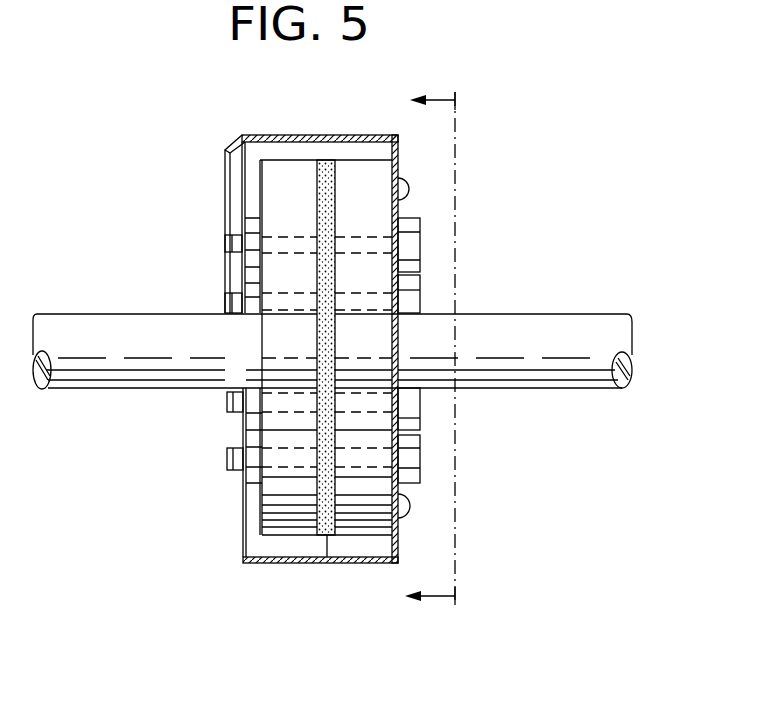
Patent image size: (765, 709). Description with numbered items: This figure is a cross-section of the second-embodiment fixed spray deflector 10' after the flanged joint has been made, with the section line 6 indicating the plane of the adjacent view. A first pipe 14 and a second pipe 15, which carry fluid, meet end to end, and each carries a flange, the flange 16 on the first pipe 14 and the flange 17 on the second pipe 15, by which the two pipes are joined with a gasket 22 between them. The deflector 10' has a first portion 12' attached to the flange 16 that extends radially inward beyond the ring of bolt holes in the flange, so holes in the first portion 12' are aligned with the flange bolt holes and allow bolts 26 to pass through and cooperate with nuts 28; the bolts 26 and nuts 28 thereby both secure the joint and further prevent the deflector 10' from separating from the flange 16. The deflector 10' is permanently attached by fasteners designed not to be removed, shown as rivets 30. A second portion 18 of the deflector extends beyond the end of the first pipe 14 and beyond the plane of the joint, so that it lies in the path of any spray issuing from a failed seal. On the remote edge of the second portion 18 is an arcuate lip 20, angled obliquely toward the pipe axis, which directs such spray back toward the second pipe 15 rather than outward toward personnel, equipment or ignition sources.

The fixed spray deflector 10' is at (245, 99).
The first portion of the deflector 12' is at (425, 538).
The pipe 14 is at (585, 323).
The pipe 15 is at (98, 326).
The flange 16 is at (395, 335).
The flange 17 is at (271, 335).
The second portion of the deflector 18 is at (327, 134).
The lip 20 is at (231, 149).
The gasket 22 is at (327, 558).
The bolts 26 is at (226, 245).
The nuts 28 is at (260, 279).
The rivets 30 is at (404, 190).
The section line 6- 6 is at (417, 348).